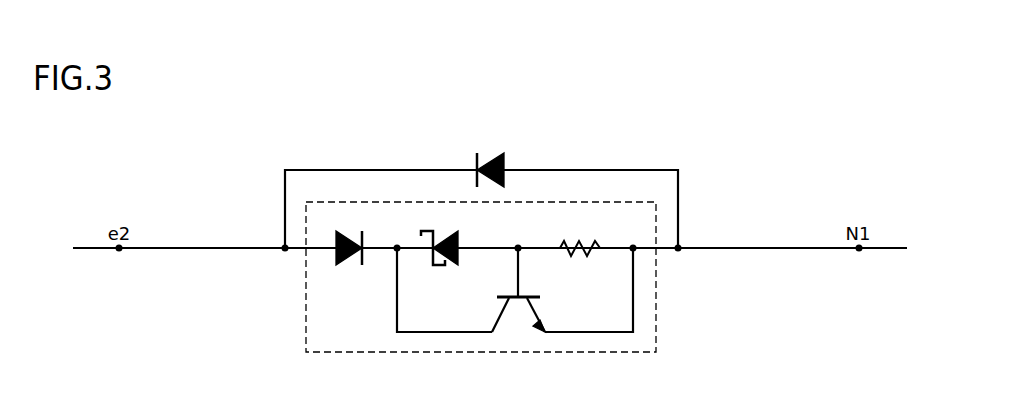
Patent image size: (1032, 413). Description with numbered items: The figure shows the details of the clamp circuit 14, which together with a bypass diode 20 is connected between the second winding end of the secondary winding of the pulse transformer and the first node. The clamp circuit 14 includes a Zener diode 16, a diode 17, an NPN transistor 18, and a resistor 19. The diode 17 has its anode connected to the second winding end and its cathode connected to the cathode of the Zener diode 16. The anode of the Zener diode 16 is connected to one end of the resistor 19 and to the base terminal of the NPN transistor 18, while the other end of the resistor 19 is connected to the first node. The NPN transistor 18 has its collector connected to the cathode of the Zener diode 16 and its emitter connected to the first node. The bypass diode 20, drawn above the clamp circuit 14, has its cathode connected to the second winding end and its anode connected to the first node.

The clamp circuit 14 is at (657, 323).
The Zener diode 16 is at (448, 266).
The diode 17 is at (352, 266).
The NPN transistor 18 is at (518, 335).
The resistor 19 is at (587, 258).
The bypass diode 20 is at (489, 153).